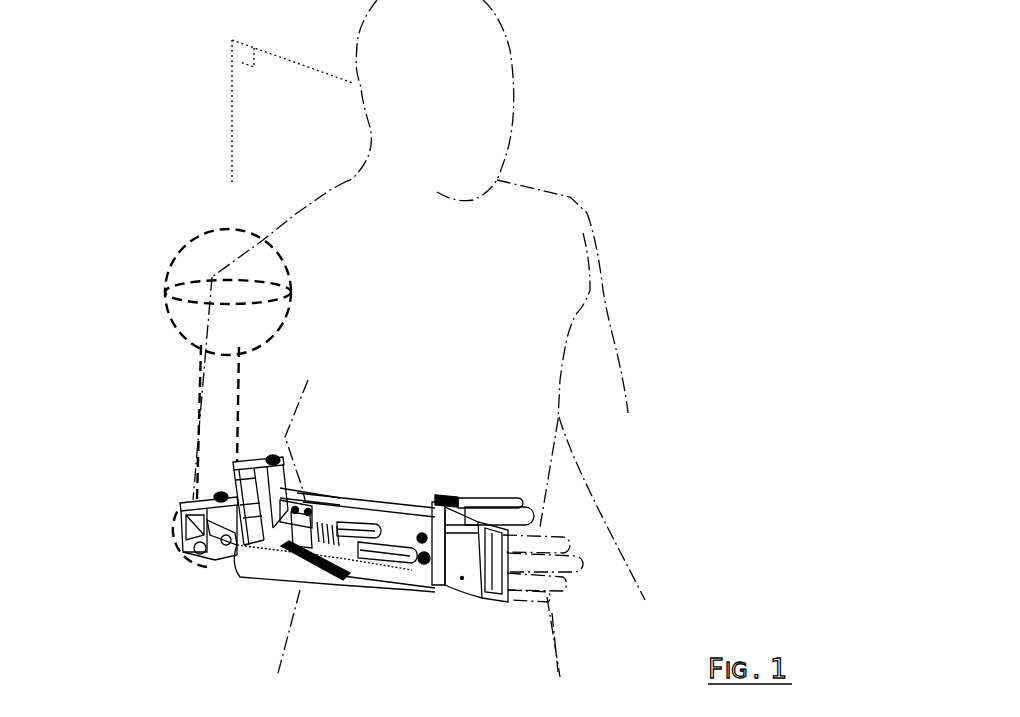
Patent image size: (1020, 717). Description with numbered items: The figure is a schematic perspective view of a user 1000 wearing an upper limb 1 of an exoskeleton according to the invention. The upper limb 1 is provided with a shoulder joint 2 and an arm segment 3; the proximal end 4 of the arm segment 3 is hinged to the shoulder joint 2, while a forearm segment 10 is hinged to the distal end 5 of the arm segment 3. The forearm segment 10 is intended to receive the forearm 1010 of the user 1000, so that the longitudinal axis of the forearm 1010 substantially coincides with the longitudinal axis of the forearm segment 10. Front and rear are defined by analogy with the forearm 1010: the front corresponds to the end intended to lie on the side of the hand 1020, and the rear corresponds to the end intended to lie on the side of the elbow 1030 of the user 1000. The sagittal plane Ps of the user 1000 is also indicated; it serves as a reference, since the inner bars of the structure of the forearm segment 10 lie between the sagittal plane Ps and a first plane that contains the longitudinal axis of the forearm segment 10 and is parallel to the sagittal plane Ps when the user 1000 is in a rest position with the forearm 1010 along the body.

The upper limb 1 is at (294, 503).
The shoulder joint 2 is at (253, 272).
The arm segment 3 is at (212, 367).
The proximal end 4 is at (203, 242).
The distal end 5 is at (178, 532).
The forearm segment 10 is at (248, 582).
The sagittal plane Ps is at (240, 62).
The user 1000 is at (548, 214).
The forearm 1010 is at (327, 502).
The hand 1020 is at (510, 547).
The elbow 1030 is at (200, 541).